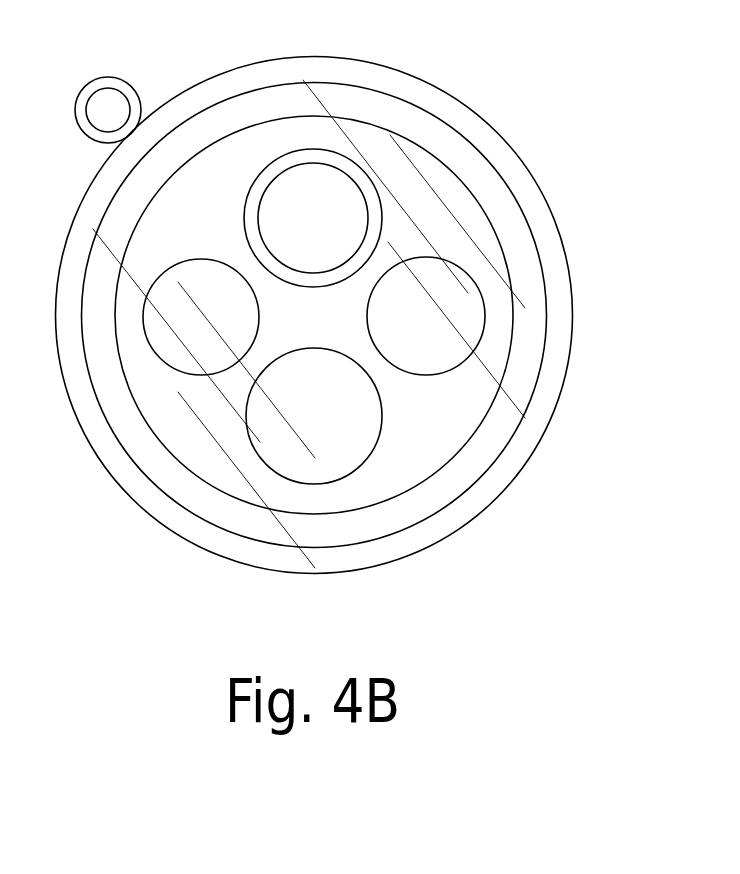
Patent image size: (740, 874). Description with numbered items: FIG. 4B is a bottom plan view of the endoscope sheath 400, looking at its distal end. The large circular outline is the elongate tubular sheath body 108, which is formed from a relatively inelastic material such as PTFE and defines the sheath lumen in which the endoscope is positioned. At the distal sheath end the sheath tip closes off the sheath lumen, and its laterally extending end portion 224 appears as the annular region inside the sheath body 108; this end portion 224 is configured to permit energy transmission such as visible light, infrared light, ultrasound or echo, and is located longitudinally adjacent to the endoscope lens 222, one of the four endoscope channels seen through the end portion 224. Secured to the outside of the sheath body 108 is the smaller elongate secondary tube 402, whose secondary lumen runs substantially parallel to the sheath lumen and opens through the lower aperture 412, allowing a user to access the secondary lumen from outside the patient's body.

The endoscope sheath 400 is at (343, 295).
The sheath body 108 is at (572, 312).
The laterally extending end portion 224 is at (475, 500).
The endoscope lens 222 is at (284, 214).
The secondary tube 402 is at (112, 78).
The lower aperture 412 is at (93, 128).